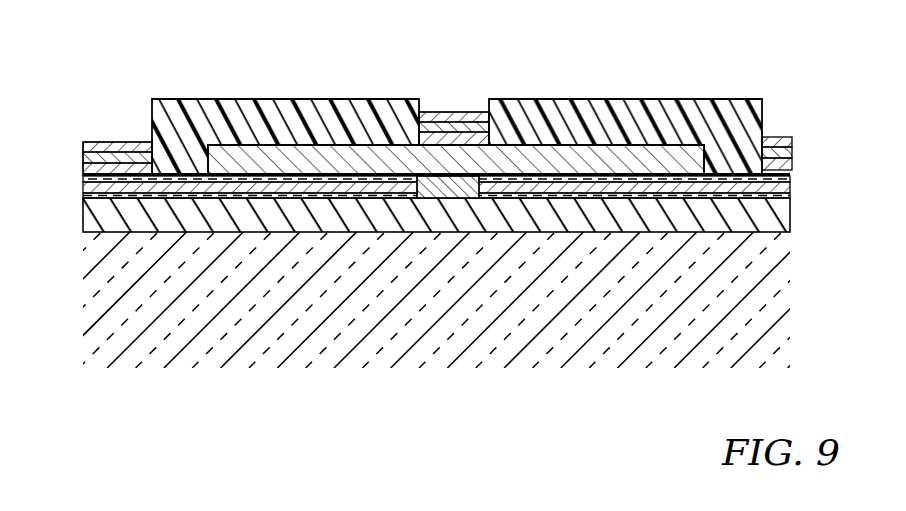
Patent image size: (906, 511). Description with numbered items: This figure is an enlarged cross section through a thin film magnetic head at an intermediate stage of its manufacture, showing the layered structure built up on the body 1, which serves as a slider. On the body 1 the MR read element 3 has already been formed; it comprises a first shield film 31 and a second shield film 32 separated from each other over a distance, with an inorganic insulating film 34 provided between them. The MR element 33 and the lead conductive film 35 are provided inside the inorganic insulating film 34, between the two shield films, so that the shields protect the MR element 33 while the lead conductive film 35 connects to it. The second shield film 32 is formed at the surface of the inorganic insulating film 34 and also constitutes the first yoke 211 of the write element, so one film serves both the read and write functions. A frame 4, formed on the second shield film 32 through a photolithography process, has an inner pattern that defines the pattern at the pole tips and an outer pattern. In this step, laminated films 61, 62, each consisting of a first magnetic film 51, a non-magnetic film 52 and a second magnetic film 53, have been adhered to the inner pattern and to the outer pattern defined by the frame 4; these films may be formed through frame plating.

The body 1 is at (100, 292).
The MR read element 3 is at (430, 193).
The frame 4 is at (177, 108).
The first shield film 31 is at (100, 219).
The second shield film 32 is at (290, 163).
The first yoke 211 is at (456, 160).
The MR element 33 is at (440, 184).
The inorganic insulating film 34 is at (148, 197).
The lead conductive film 35 is at (239, 192).
The first magnetic film 51 is at (88, 170).
The non-magnetic film 52 is at (84, 156).
The second magnetic film 53 is at (133, 142).
The laminated film 61 is at (473, 92).
The laminated film 62 is at (99, 129).